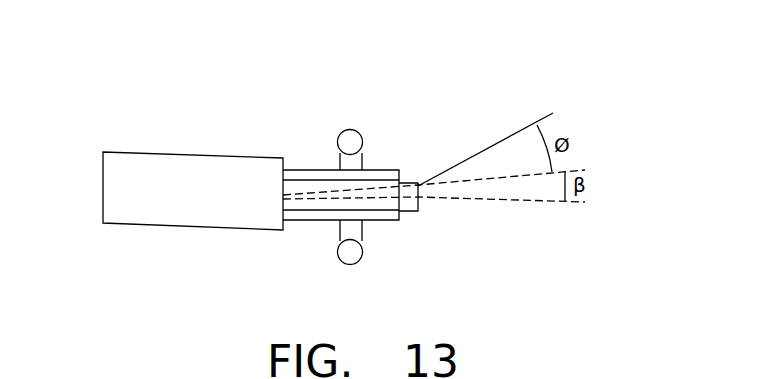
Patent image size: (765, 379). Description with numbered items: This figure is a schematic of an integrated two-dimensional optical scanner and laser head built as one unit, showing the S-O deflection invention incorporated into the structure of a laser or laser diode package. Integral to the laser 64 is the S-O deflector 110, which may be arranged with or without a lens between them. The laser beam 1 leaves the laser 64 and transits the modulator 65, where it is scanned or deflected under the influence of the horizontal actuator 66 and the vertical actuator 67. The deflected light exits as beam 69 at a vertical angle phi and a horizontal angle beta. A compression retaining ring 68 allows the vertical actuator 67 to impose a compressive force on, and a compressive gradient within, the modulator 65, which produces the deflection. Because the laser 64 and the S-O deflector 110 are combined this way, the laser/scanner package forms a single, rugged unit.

The laser 64 is at (153, 202).
The laser beam 1 is at (330, 195).
The modulator 65 is at (395, 205).
The horizontal actuator 66 is at (383, 220).
The vertical actuator 67 is at (342, 231).
The compression retaining ring 68 is at (353, 129).
The exiting beam 69 is at (488, 145).
The S-O deflector 110 is at (389, 143).